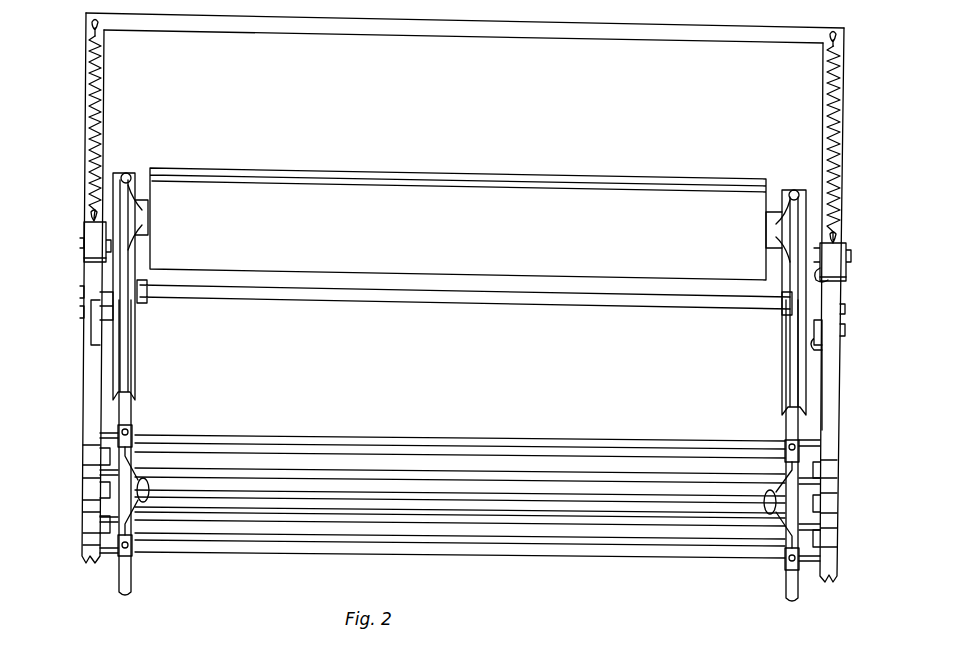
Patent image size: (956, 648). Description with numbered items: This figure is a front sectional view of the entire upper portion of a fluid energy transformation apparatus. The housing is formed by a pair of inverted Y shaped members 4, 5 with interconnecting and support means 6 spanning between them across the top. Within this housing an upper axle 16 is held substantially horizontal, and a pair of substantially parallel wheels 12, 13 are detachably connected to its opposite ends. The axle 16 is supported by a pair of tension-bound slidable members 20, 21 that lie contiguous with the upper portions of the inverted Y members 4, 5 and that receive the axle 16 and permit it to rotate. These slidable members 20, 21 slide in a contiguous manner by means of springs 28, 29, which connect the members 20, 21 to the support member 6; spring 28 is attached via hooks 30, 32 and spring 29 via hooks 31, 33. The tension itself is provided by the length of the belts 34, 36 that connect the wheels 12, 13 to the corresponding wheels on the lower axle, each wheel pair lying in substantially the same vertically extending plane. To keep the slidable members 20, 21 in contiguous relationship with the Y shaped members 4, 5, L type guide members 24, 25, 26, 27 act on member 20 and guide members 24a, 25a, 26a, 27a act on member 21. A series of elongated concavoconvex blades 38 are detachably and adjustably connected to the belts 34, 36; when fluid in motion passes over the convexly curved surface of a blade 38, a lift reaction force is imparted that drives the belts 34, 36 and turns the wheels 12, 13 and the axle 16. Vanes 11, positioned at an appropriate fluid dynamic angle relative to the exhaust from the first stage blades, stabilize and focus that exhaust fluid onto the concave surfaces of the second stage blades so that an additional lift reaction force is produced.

The inverted Y shaped member 4 is at (840, 426).
The inverted Y shaped member 5 is at (82, 402).
The interconnecting and support means 6 is at (378, 20).
The vanes 11 is at (318, 448).
The wheel 12 is at (778, 366).
The wheel 13 is at (140, 362).
The axle 16 is at (418, 310).
The tension-bound slidable member 20 is at (832, 358).
The tension-bound slidable member 21 is at (90, 345).
The guide member 24 is at (850, 258).
The guide member 24a is at (82, 240).
The guide member 25 is at (832, 279).
The guide member 25a is at (104, 262).
The guide member 26 is at (846, 326).
The guide member 26a is at (82, 310).
The guide member 27 is at (823, 345).
The guide member 27a is at (100, 320).
The spring 28 is at (825, 90).
The spring 29 is at (104, 78).
The hook 30 is at (845, 37).
The hook 31 is at (92, 22).
The hook 32 is at (840, 239).
The hook 33 is at (90, 217).
The belt 34 is at (786, 428).
The belt 36 is at (131, 418).
The blades 38 is at (452, 170).